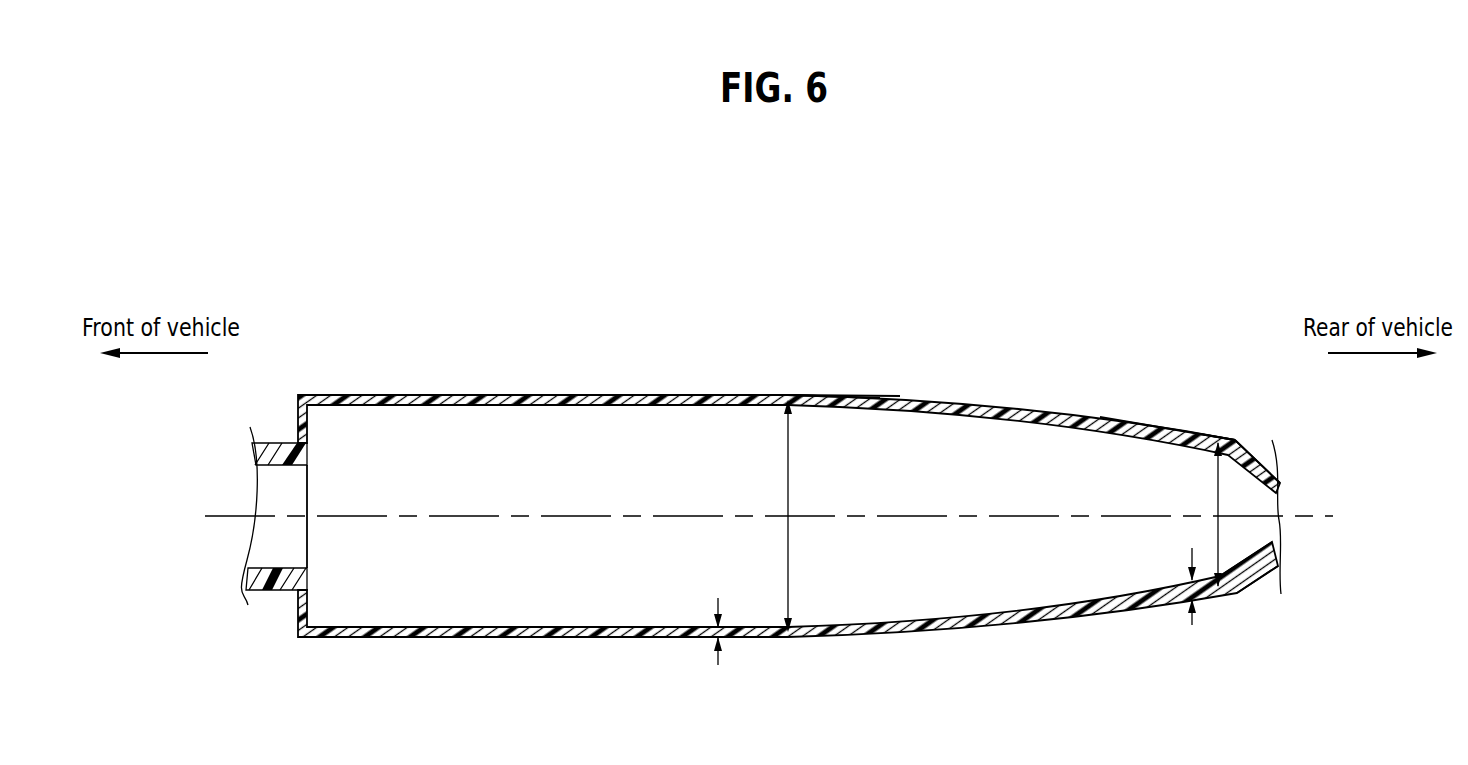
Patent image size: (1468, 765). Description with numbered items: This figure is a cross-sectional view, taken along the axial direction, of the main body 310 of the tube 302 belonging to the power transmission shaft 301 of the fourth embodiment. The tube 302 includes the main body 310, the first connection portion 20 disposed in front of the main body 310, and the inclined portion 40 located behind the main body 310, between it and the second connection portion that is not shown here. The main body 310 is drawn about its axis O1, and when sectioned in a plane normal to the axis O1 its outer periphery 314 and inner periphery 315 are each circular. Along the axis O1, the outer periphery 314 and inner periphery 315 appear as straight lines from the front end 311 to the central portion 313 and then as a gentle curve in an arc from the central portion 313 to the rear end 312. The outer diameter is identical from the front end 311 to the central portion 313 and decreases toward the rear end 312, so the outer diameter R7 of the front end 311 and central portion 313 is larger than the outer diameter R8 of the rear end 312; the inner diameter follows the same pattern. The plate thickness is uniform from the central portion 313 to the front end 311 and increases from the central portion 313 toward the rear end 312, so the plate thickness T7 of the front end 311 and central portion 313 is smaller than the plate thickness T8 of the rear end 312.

The power transmission shaft 301 is at (1018, 220).
The tube 302 is at (895, 335).
The main body 310 is at (1013, 352).
The front end 311 is at (333, 397).
The rear end 312 is at (1218, 442).
The central portion 313 is at (825, 397).
The outer periphery 314 is at (664, 397).
The inner periphery 315 is at (613, 407).
The first connection portion 20 is at (272, 586).
The inclined portion 40 is at (1262, 572).
The axis O1 is at (222, 516).
The outer diameter of the front end and central portion R7 is at (807, 516).
The plate thickness of the front end and central portion T7 is at (737, 633).
The outer diameter of the rear end R8 is at (1237, 514).
The plate thickness of the rear end T8 is at (1210, 588).